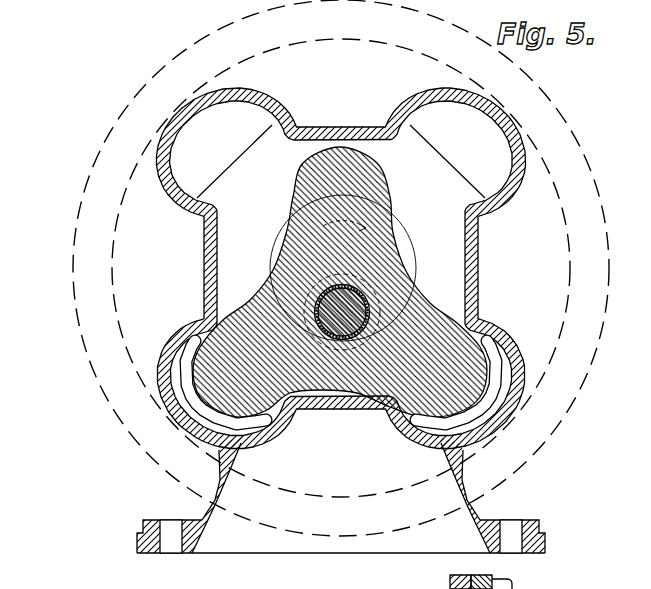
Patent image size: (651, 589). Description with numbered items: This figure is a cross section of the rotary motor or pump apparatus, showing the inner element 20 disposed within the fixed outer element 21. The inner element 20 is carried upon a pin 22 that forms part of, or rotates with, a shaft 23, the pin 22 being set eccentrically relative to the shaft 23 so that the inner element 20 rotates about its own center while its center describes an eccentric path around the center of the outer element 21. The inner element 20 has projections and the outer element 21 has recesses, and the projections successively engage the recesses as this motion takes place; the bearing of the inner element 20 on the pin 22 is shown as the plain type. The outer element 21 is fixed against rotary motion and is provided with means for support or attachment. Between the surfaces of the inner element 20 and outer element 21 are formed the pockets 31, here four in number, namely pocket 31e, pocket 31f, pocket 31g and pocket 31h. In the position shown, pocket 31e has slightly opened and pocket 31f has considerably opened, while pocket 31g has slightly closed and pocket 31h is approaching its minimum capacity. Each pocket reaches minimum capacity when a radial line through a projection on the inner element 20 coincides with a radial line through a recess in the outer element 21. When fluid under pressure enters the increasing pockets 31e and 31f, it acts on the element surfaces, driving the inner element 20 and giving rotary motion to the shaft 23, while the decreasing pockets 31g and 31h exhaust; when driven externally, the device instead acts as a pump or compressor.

The inner element 20 is at (417, 312).
The outer element 21 is at (205, 264).
The pin 22 is at (313, 312).
The shaft 23 is at (372, 255).
The pockets 31 is at (493, 163).
The pocket 31e is at (440, 424).
The pocket 31f is at (447, 171).
The pocket 31g is at (234, 168).
The pocket 31h is at (246, 430).